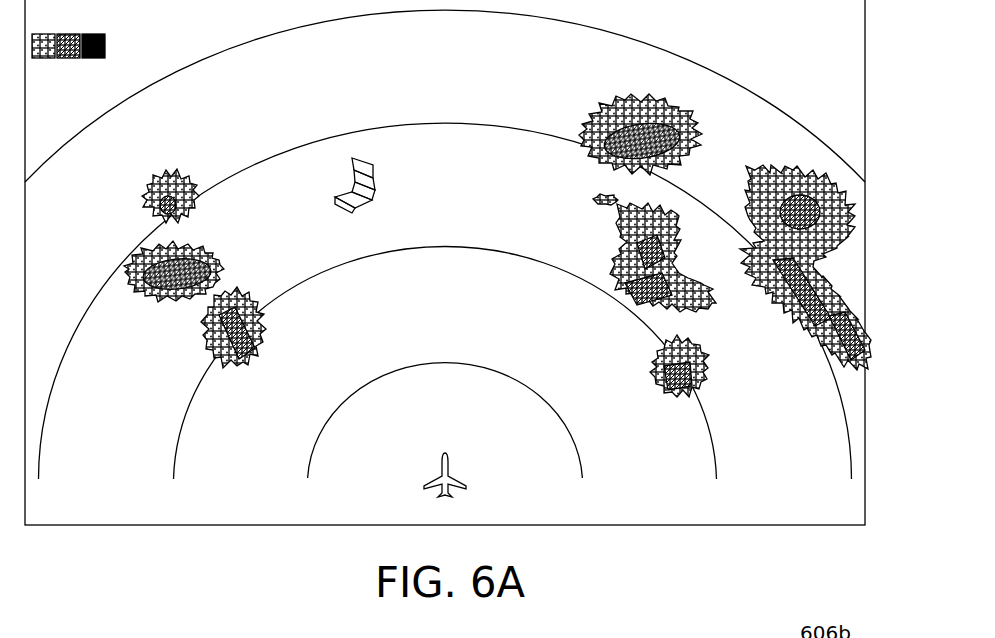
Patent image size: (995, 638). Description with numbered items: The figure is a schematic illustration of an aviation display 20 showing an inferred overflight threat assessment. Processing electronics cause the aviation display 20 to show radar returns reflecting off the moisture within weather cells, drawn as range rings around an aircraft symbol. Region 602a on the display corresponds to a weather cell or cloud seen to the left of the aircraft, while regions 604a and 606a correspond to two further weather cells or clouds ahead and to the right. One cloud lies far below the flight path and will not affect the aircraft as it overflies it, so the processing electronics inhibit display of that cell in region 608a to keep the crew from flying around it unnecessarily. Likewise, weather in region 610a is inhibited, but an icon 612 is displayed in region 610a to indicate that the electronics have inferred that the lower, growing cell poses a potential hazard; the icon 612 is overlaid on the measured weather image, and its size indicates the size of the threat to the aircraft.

The aviation display 20 is at (93, 525).
The region 602a is at (221, 342).
The region 604a is at (622, 249).
The region 606a is at (797, 298).
The region 608a is at (458, 272).
The region 610a is at (364, 158).
The icon 612 is at (350, 174).